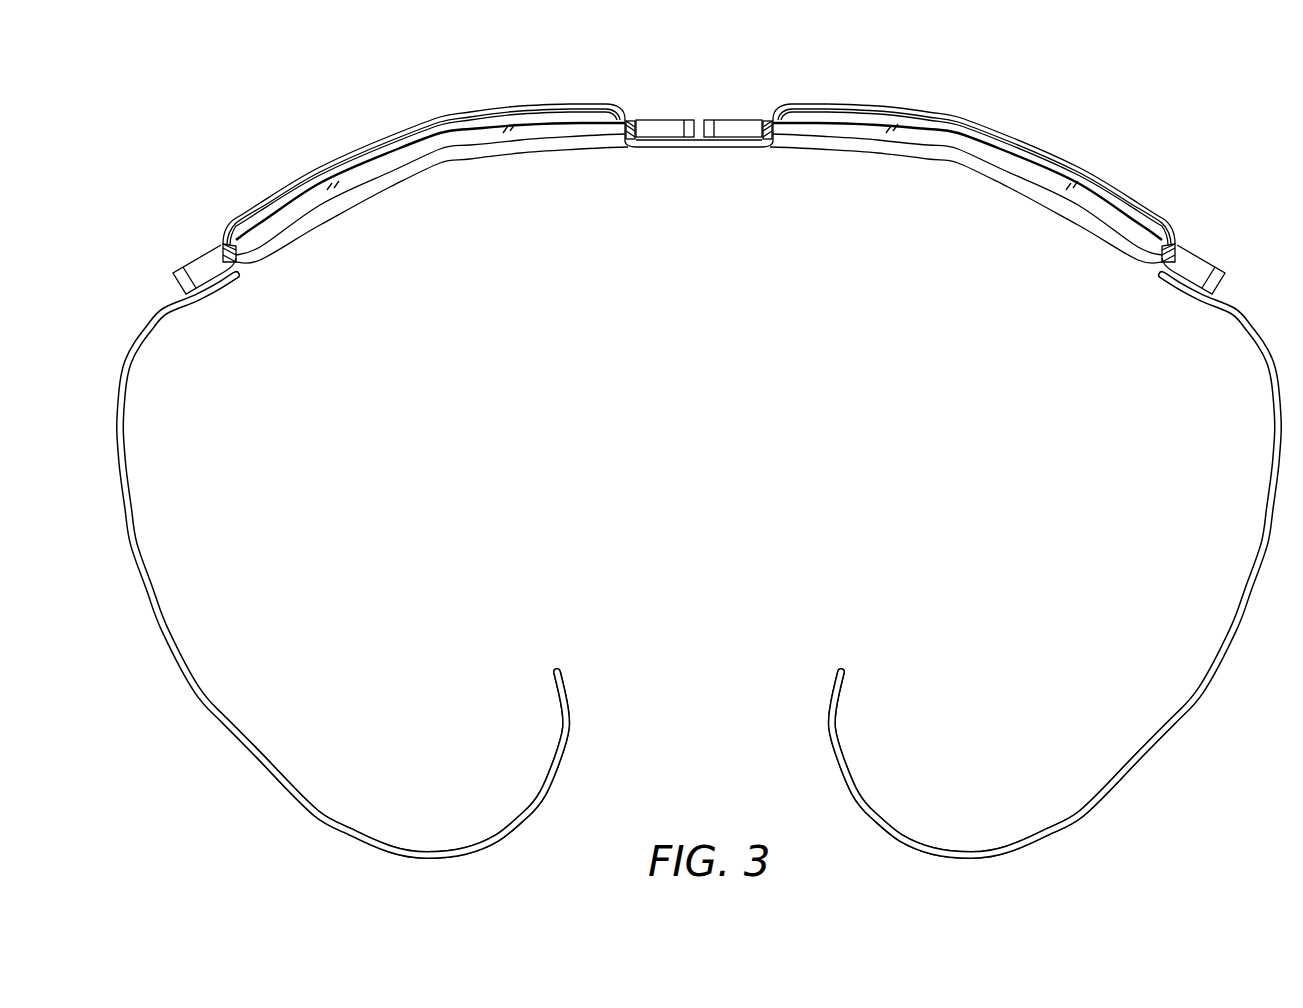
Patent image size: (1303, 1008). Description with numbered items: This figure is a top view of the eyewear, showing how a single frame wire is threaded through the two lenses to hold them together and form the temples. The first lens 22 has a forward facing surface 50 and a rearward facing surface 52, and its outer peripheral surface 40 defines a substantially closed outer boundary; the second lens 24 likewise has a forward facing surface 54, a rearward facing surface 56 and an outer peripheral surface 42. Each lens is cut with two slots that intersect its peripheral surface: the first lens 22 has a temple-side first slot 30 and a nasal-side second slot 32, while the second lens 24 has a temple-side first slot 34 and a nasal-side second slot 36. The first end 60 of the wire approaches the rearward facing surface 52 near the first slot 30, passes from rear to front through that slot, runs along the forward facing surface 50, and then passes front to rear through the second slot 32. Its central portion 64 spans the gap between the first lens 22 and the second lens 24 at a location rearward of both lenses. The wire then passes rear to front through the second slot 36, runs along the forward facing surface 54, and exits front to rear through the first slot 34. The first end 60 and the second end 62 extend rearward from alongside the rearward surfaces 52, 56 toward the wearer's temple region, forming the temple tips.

The first lens 22 is at (1202, 249).
The second lens 24 is at (196, 249).
The first slot 30 is at (1160, 252).
The second slot 32 is at (772, 130).
The first slot 34 is at (626, 130).
The second slot 36 is at (238, 252).
The outer peripheral surface 40 is at (905, 152).
The outer peripheral surface 42 is at (492, 152).
The forward facing surface 50 is at (977, 153).
The rearward facing surface 52 is at (980, 187).
The forward facing surface 54 is at (420, 157).
The rearward facing surface 56 is at (418, 187).
The first end 60 is at (916, 813).
The second end 62 is at (482, 813).
The central portion 64 is at (805, 86).